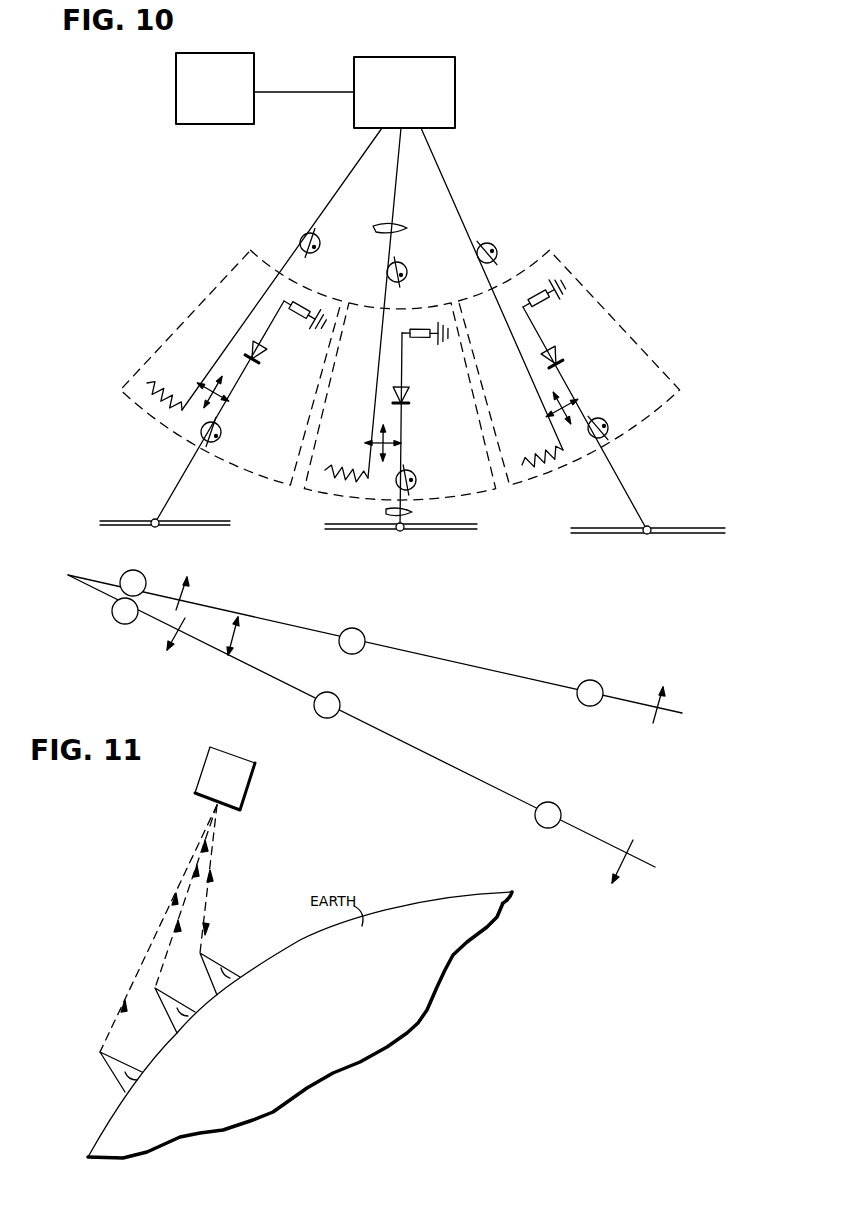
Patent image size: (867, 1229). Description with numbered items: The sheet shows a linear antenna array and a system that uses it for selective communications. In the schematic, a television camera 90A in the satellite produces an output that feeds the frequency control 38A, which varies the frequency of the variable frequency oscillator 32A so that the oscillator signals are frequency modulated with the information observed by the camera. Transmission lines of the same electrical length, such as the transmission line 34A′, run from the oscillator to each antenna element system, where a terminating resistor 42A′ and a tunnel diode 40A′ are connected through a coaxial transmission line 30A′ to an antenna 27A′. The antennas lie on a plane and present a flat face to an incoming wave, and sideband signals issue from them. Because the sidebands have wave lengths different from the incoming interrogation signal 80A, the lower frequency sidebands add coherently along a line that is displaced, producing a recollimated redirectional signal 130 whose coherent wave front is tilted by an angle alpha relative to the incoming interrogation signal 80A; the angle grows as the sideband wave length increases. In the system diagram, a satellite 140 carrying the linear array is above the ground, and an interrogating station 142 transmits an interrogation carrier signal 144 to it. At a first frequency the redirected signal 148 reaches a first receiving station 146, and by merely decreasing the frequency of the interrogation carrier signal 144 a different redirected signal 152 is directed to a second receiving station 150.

In FIG. 10, the frequency control 38A is at (262, 90).
In FIG. 10, the variable frequency oscillator 32A is at (400, 57).
In FIG. 10, the television camera 90A is at (214, 124).
In FIG. 10, the transmission line 34A′ is at (350, 174).
In FIG. 10, the terminating resistor 42A′ is at (300, 304).
In FIG. 10, the tunnel diode 40A′ is at (262, 357).
In FIG. 10, the coaxial transmission line 30A′ is at (230, 396).
In FIG. 10, the antenna 27A′ is at (186, 521).
In FIG. 10, the incoming interrogation signal 80A is at (465, 664).
In FIG. 10, the recollimated redirectional signal 130 is at (425, 756).
In FIG. 11, the satellite 140 is at (238, 795).
In FIG. 11, the interrogating station 142 is at (225, 975).
In FIG. 11, the interrogation carrier signal 144 is at (216, 858).
In FIG. 11, the first receiving station 146 is at (182, 1016).
In FIG. 11, the redirected signal 148 is at (192, 878).
In FIG. 11, the second receiving station 150 is at (135, 1079).
In FIG. 11, the redirected signal 152 is at (157, 932).